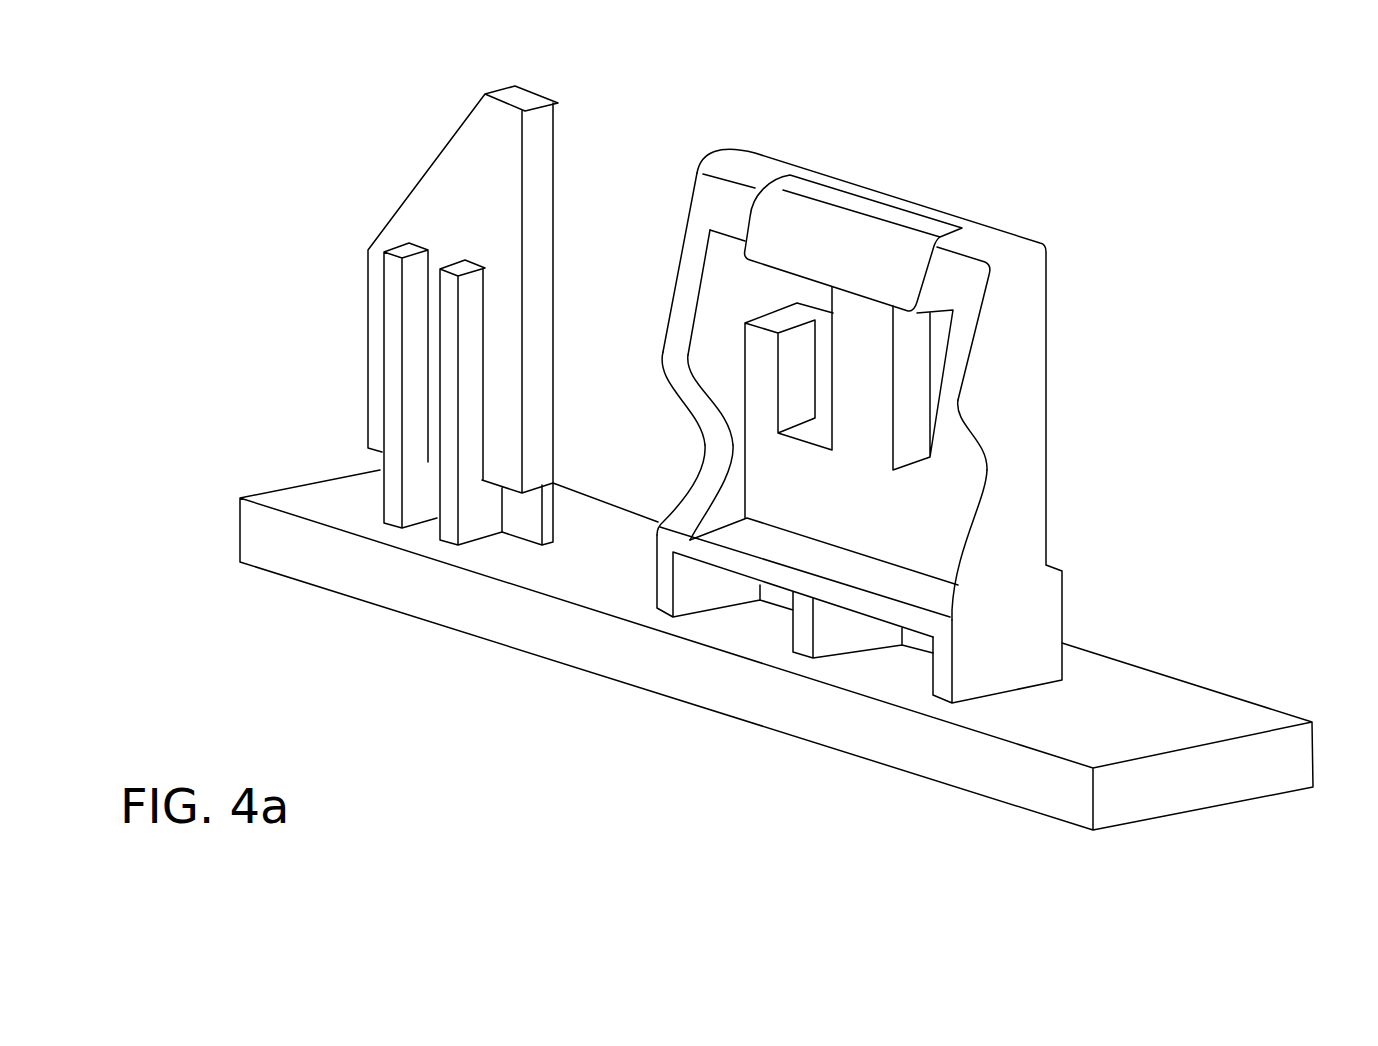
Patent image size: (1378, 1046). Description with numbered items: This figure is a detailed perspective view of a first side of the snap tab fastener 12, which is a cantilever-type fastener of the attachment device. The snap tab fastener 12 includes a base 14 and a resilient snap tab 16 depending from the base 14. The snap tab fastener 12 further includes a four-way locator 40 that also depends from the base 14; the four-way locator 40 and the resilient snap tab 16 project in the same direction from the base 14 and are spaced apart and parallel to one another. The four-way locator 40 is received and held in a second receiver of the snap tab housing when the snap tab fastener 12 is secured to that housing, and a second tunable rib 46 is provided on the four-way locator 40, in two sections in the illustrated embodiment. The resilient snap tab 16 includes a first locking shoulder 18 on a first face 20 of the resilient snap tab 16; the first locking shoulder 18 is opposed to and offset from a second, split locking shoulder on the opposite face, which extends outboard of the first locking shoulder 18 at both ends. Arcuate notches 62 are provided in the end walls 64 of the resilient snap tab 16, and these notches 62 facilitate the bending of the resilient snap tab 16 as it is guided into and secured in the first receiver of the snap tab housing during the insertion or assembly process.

The snap tab fastener 12 is at (947, 143).
The base 14 is at (628, 653).
The resilient snap tab 16 is at (1048, 384).
The first locking shoulder 18 is at (840, 277).
The first face 20 is at (857, 438).
The four-way locator 40 is at (558, 235).
The second tunable rib 46 is at (443, 430).
The arcuate notches 62 is at (705, 462).
The end walls 64 is at (668, 344).